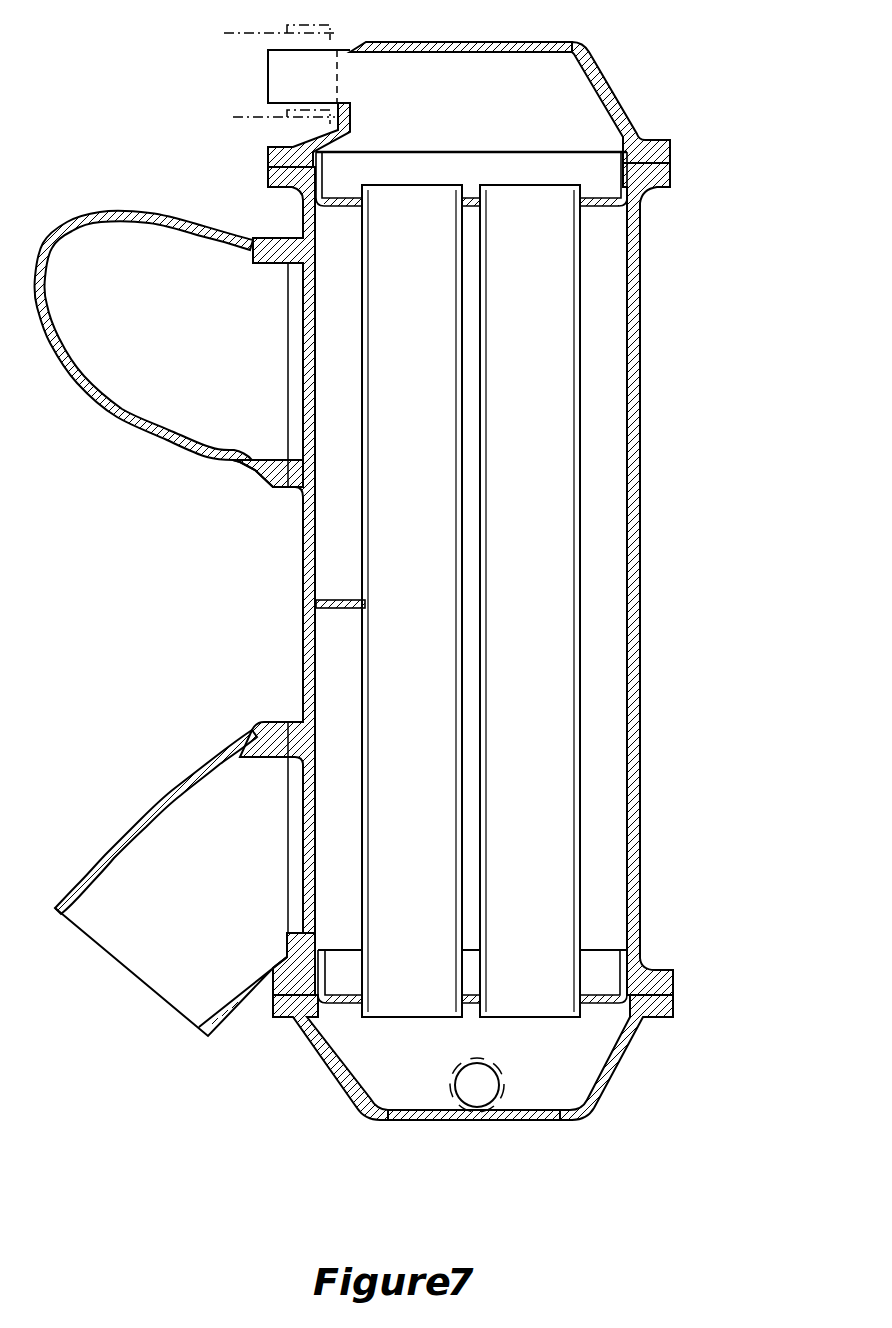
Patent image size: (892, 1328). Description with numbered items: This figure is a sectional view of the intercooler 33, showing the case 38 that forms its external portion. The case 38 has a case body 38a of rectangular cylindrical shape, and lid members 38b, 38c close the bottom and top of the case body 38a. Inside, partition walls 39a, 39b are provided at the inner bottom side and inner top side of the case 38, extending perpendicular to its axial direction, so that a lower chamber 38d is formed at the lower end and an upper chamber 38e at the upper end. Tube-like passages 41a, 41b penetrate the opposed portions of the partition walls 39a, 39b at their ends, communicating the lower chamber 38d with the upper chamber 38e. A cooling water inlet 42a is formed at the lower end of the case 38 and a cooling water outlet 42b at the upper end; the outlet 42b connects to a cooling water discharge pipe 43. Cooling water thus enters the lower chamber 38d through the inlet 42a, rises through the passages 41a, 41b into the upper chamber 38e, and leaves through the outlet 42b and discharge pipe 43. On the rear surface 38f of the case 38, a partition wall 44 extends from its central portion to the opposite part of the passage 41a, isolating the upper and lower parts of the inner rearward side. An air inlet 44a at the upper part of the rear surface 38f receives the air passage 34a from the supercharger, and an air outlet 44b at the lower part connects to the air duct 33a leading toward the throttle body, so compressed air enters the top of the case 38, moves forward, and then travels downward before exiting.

The intercooler 33 is at (658, 47).
The air duct 33a is at (107, 856).
The air passage 34a is at (107, 214).
The case 38 is at (472, 587).
The case body 38a is at (634, 472).
The lid member 38b is at (608, 1090).
The lid member 38c is at (473, 42).
The lower chamber 38d is at (375, 1121).
The upper chamber 38e is at (598, 82).
The rear surface 38f is at (304, 537).
The partition wall 39a is at (595, 1004).
The partition wall 39b is at (605, 208).
The tube-like passage 41a is at (409, 192).
The tube-like passage 41b is at (518, 192).
The cooling water inlet 42a is at (470, 1110).
The cooling water outlet 42b is at (293, 103).
The cooling water discharge pipe 43 is at (224, 29).
The partition wall 44 is at (338, 607).
The air inlet 44a is at (302, 460).
The air outlet 44b is at (305, 933).